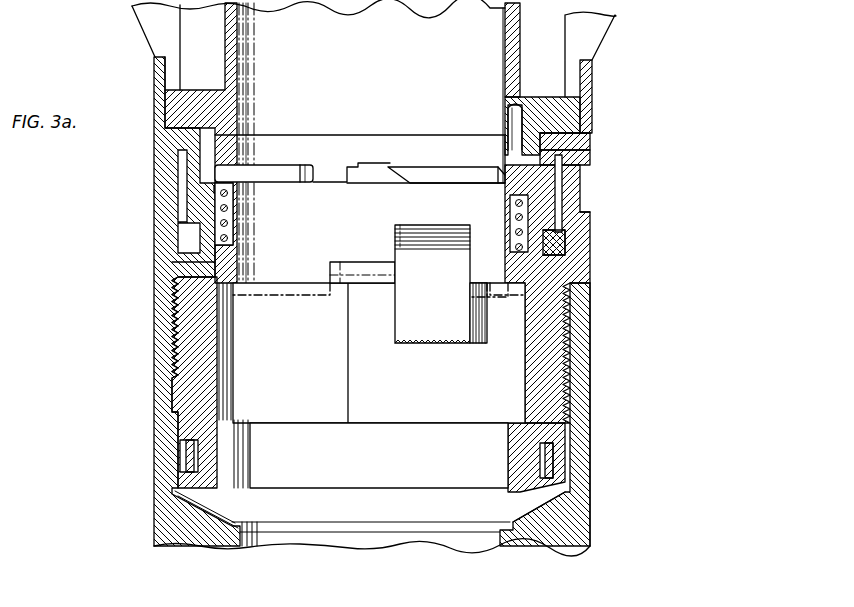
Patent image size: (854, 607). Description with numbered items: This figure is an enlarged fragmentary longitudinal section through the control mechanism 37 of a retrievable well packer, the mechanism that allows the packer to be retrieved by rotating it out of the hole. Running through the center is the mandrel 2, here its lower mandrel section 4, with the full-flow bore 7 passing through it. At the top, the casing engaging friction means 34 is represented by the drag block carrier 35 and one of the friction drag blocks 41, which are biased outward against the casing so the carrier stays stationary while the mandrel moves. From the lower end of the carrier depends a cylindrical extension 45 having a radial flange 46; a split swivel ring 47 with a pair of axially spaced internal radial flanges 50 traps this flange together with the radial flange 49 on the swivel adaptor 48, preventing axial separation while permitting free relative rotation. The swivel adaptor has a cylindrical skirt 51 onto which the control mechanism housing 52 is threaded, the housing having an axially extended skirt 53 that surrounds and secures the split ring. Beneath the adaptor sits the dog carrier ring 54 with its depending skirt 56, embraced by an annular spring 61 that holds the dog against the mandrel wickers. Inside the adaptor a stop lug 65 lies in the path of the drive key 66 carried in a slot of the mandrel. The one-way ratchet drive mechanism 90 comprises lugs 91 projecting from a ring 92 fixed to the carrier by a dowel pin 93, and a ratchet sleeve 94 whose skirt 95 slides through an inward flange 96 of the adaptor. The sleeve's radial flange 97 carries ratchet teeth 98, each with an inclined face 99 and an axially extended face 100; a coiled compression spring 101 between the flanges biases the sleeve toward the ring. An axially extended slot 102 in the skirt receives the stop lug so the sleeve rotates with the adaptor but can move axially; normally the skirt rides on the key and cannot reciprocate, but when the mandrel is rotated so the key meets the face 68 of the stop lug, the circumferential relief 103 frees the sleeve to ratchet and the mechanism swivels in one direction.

The mandrel 2 is at (224, 33).
The lower mandrel section 4 is at (150, 15).
The bore 7 is at (245, 58).
The casing engaging friction means 34 is at (617, 20).
The drag block carrier 35 is at (512, 42).
The control mechanism 37 is at (594, 297).
The friction drag blocks 41 is at (592, 34).
The cylindrical extension 45 is at (580, 148).
The radial flange 46 is at (562, 176).
The split swivel ring 47 is at (580, 164).
The swivel adaptor 48 is at (556, 270).
The radial flange 49 is at (548, 206).
The internal radial flanges 50 is at (582, 137).
The cylindrical skirt 51 is at (552, 334).
The control mechanism housing 52 is at (576, 400).
The axially extended skirt 53 is at (552, 246).
The dog carrier ring 54 is at (556, 433).
The depending skirt 56 is at (218, 469).
The annular spring 61 is at (552, 466).
The stop lug 65 is at (441, 284).
The drive key 66 is at (346, 404).
The face 68 is at (395, 330).
The one-way ratchet drive mechanism 90 is at (214, 216).
The lugs 91 is at (383, 152).
The ring 92 is at (410, 135).
The dowel pin 93 is at (510, 120).
The ratchet sleeve 94 is at (302, 180).
The skirt 95 is at (240, 270).
The flange 96 is at (172, 262).
The radial flange 97 is at (517, 190).
The ratchet teeth 98 is at (372, 178).
The inclined face 99 is at (410, 182).
The axially extended face 100 is at (347, 177).
The coiled compression spring 101 is at (214, 190).
The axially extended slot 102 is at (395, 236).
The circumferential relief 103 is at (330, 275).